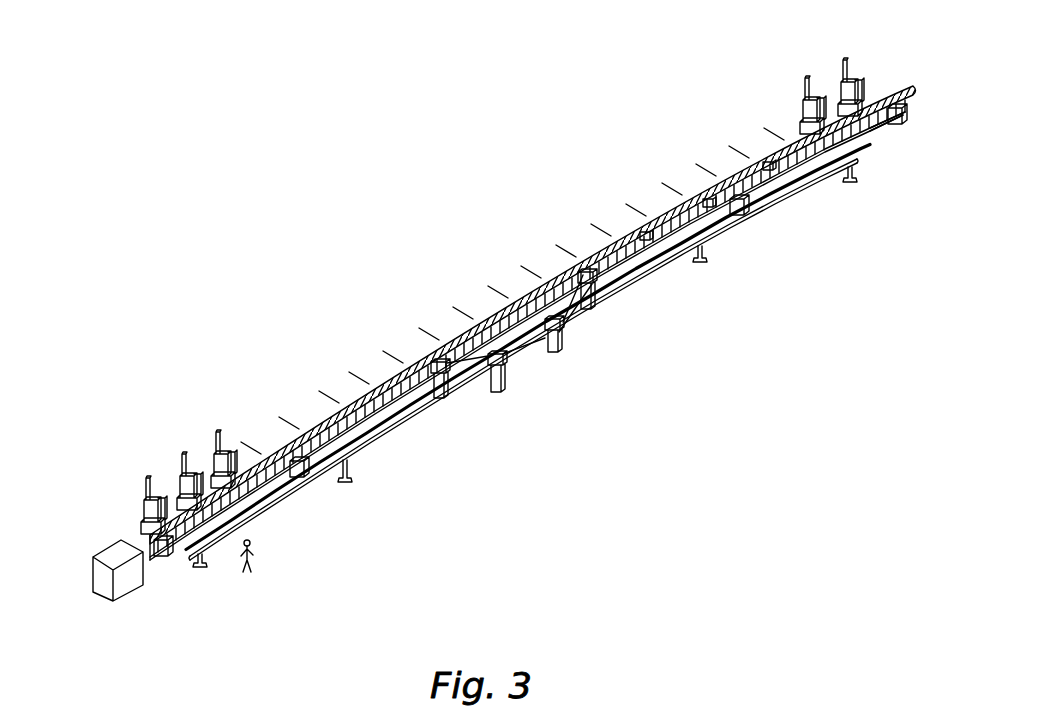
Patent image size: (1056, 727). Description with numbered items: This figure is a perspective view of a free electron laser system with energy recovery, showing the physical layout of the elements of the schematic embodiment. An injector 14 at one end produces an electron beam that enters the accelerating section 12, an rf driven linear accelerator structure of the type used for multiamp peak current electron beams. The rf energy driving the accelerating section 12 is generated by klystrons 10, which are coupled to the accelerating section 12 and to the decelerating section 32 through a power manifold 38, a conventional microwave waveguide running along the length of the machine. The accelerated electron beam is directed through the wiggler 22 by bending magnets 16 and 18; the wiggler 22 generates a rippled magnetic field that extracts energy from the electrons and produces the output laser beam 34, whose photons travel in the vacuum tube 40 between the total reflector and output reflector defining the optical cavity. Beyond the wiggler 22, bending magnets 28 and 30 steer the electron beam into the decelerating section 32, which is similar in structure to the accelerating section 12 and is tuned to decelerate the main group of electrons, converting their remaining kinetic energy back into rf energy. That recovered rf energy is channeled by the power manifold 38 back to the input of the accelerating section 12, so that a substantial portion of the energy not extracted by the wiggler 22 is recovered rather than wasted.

The klystron 10 is at (152, 498).
The accelerating section 12 is at (272, 468).
The injector 14 is at (96, 577).
The bending magnet 16 is at (447, 390).
The bending magnet 18 is at (507, 389).
The wiggler 22 is at (545, 352).
The bending magnet 28 is at (562, 333).
The bending magnet 30 is at (608, 295).
The decelerating section 32 is at (886, 116).
The output laser beam 34 is at (185, 552).
The power manifold 38 is at (445, 356).
The vacuum tube 40 is at (776, 190).